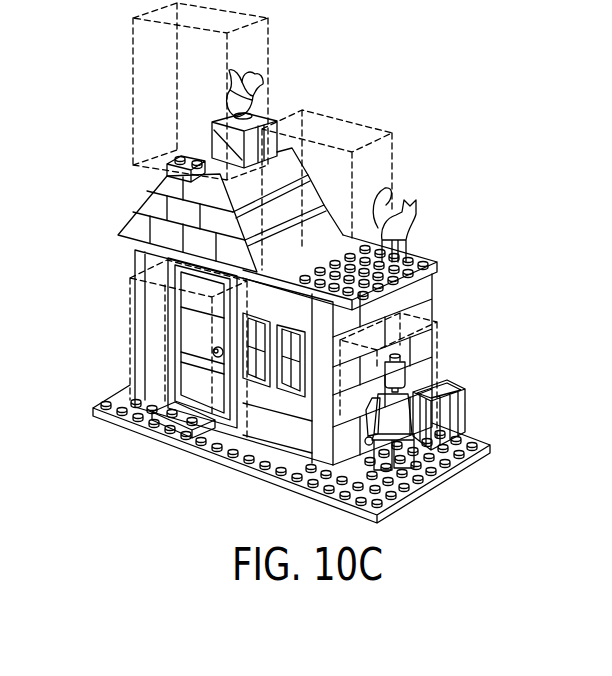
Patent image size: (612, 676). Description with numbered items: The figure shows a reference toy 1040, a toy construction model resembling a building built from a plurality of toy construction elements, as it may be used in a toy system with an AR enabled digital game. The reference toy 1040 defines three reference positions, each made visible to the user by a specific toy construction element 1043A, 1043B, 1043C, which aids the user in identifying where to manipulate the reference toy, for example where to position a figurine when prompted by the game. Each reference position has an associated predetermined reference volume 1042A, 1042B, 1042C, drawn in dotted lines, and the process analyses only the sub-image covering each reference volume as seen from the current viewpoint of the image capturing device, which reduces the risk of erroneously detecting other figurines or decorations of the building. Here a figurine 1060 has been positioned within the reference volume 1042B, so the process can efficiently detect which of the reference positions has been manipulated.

The reference toy 1040 is at (134, 212).
The reference volume 1042A is at (131, 43).
The reference volume 1042B is at (440, 343).
The reference volume 1042C is at (398, 146).
The toy construction element 1043A is at (170, 157).
The toy construction element 1043B is at (416, 481).
The toy construction element 1043C is at (405, 240).
The figurine 1060 is at (440, 393).